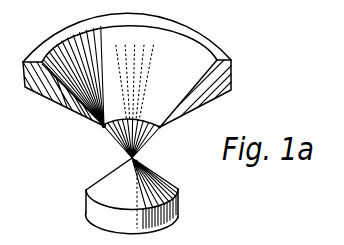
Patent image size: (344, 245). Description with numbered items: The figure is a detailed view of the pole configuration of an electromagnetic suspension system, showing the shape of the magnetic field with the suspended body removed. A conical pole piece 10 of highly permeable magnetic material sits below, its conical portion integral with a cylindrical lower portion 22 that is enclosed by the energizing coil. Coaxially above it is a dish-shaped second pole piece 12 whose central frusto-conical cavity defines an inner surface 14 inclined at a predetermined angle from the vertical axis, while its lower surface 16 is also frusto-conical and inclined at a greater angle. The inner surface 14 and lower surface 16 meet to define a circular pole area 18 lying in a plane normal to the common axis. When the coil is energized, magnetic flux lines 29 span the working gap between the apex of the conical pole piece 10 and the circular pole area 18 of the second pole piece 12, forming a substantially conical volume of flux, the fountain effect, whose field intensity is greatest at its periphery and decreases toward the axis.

The conical pole piece 10 is at (178, 189).
The second pole piece 12 is at (220, 84).
The inner surface 14 is at (192, 49).
The lower surface 16 is at (57, 104).
The circular pole area 18 is at (104, 128).
The cylindrical lower portion 22 is at (90, 212).
The magnetic flux lines 29 is at (158, 130).